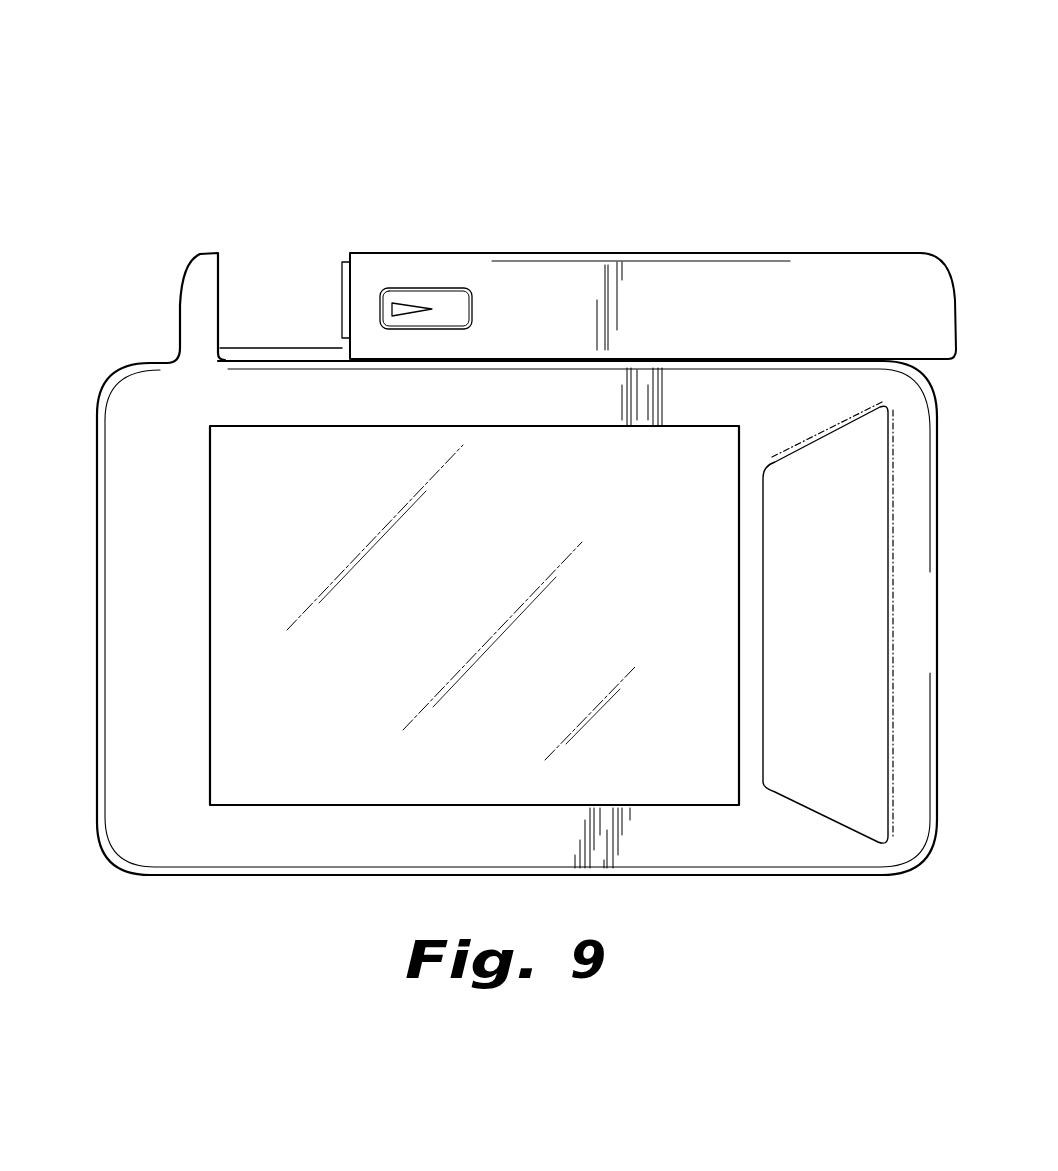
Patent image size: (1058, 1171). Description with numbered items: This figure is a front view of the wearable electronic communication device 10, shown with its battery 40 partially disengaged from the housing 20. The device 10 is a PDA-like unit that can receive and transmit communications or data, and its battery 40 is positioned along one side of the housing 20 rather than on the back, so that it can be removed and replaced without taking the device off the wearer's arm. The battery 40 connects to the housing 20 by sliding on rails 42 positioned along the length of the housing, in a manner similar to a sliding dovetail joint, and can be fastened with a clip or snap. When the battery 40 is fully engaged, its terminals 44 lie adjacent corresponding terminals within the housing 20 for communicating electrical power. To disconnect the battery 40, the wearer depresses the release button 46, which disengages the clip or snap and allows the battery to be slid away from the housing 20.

The wearable electronic communication device 10 is at (824, 110).
The housing 20 is at (178, 302).
The battery 40 is at (662, 253).
The rails 42 is at (270, 348).
The terminals 44 is at (342, 325).
The release button 46 is at (441, 297).